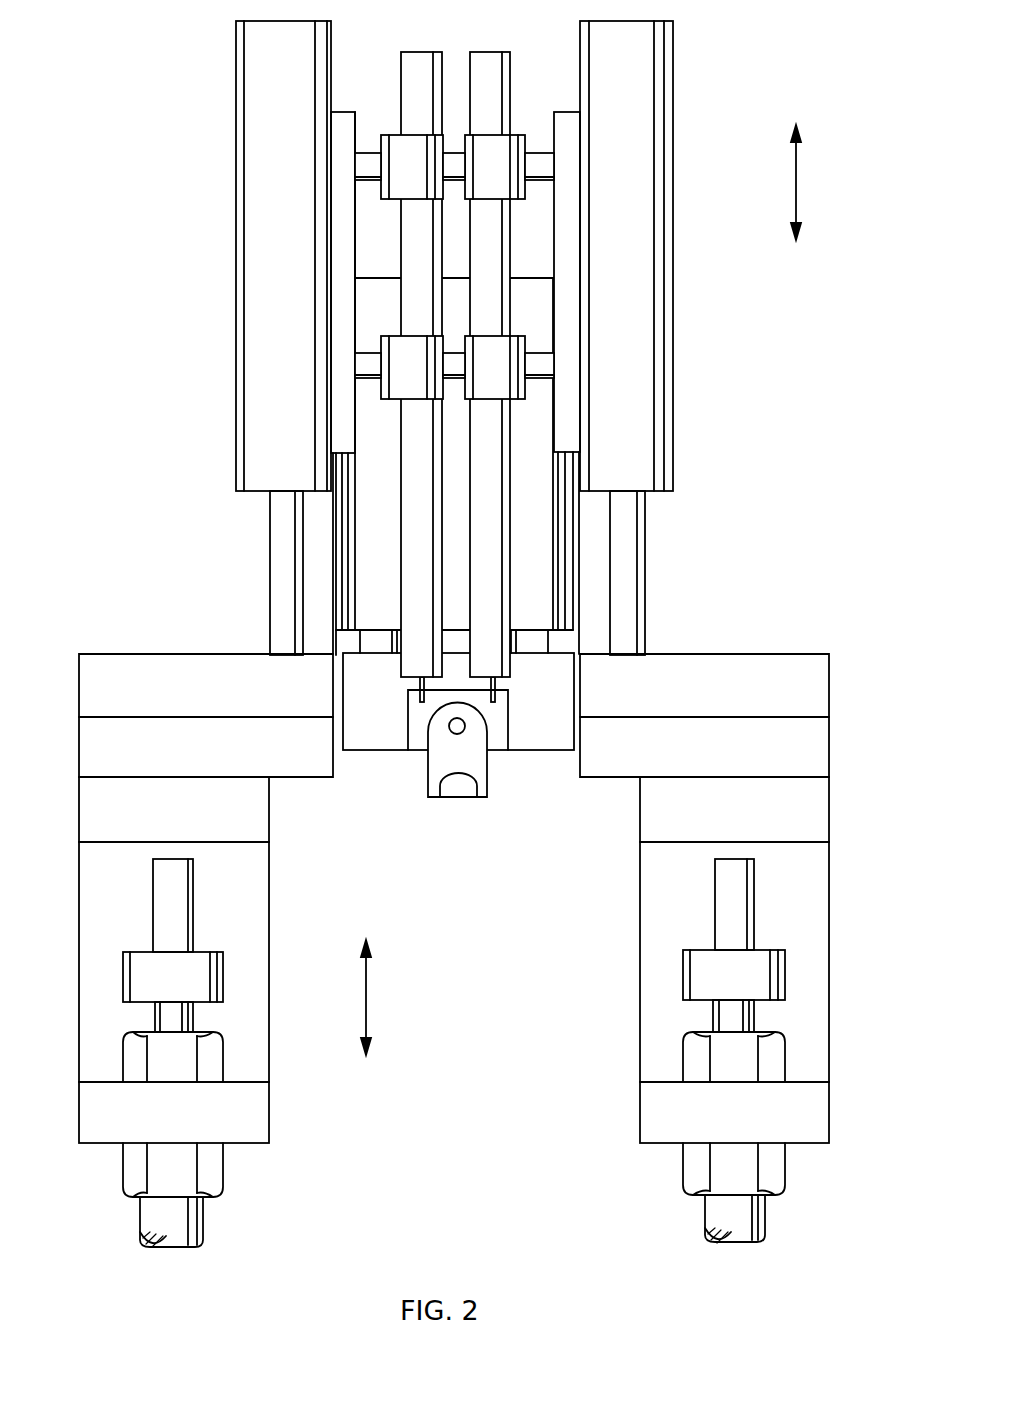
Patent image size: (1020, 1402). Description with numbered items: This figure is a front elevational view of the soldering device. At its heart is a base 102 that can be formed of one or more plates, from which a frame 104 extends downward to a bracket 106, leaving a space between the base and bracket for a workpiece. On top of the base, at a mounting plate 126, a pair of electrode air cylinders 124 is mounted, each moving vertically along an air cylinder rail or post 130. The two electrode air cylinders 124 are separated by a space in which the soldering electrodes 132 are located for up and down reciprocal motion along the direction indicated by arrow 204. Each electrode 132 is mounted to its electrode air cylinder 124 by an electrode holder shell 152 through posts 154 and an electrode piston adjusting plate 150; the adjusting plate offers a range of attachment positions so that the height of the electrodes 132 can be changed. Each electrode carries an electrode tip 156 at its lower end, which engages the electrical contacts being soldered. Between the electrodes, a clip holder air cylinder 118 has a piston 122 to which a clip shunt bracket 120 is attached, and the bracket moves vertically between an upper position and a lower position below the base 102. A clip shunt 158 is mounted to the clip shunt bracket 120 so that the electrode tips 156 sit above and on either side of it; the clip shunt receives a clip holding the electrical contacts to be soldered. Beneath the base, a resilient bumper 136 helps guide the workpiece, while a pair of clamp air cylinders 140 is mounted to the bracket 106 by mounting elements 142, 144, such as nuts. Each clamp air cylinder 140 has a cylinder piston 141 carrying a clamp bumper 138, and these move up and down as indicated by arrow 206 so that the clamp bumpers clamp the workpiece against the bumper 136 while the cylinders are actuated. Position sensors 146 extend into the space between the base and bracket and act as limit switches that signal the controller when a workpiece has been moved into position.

The base 102 is at (158, 761).
The frame 104 is at (258, 912).
The bracket 106 is at (255, 1125).
The clip holder air cylinder 118 is at (550, 480).
The clip shunt bracket 120 is at (555, 672).
The piston 122 is at (537, 632).
The electrode air cylinder 124 is at (253, 233).
The mounting plate 126 is at (158, 667).
The air cylinder rail or post 130 is at (283, 563).
The soldering electrode 132 is at (416, 66).
The bumper 136 is at (160, 826).
The clamp bumper 138 is at (212, 980).
The clamp air cylinder 140 is at (145, 1218).
The cylinder piston 141 is at (172, 1018).
The mounting element 142 is at (130, 1172).
The mounting element 144 is at (212, 1065).
The position sensor 146 is at (175, 917).
The electrode piston adjusting plate 150 is at (343, 305).
The electrode holder shell 152 is at (398, 145).
The post 154 is at (368, 168).
The electrode tip 156 is at (412, 722).
The clip shunt 158 is at (424, 795).
The arrow 204 is at (800, 180).
The arrow 206 is at (368, 1005).